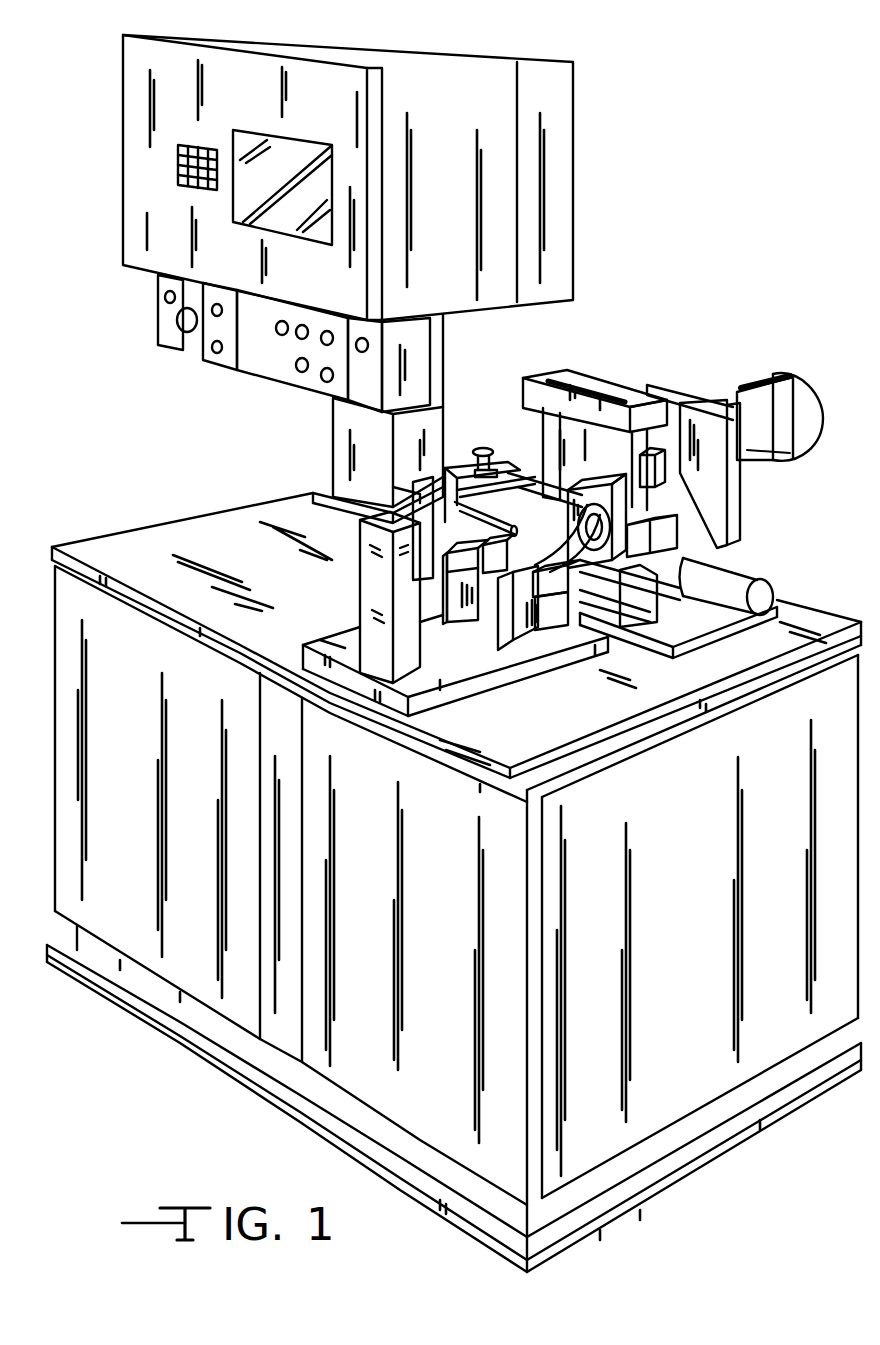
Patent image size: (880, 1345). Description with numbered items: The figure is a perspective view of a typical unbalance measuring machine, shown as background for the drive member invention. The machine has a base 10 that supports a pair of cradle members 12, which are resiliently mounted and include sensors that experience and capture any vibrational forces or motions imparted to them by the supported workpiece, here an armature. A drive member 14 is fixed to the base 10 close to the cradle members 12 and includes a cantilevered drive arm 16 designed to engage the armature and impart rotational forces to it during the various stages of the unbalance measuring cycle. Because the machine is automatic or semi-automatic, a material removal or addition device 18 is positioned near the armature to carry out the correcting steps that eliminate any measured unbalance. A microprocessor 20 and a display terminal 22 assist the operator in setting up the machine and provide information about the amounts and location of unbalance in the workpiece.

The base 10 is at (708, 933).
The cradle members 12 is at (468, 600).
The drive member 14 is at (498, 437).
The cantilevered drive arm 16 is at (587, 508).
The material removal or addition device 18 is at (590, 407).
The microprocessor 20 is at (267, 350).
The display terminal 22 is at (263, 187).